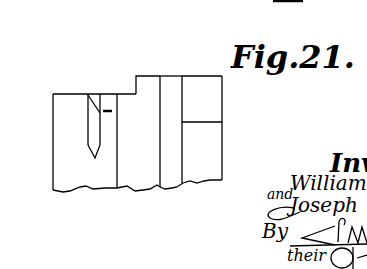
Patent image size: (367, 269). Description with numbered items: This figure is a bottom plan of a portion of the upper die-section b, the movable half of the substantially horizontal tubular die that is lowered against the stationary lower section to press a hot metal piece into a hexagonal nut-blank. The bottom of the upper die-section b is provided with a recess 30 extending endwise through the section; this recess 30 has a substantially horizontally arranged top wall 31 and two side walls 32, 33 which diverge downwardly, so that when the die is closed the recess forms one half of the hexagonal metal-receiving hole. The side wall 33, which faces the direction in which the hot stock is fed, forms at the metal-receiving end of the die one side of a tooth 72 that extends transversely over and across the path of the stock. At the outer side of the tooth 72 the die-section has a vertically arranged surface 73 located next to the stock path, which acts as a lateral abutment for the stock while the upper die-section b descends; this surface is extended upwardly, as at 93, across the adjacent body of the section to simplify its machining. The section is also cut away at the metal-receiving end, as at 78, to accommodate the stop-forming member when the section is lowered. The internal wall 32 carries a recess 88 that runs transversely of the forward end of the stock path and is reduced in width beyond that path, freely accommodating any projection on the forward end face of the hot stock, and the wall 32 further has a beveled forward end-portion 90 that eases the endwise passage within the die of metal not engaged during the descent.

The upper die-section b is at (53, 133).
The recess 30 is at (95, 167).
The top wall 31 is at (141, 172).
The side wall 32 is at (103, 176).
The side wall 33 is at (172, 172).
The tooth 72 is at (182, 76).
The vertically arranged surface 73 is at (204, 122).
The recess or cut-away 78 is at (138, 87).
The recess 88 is at (88, 117).
The beveled forward end-portion 90 is at (100, 96).
The upwardly extended surface 93 is at (216, 91).